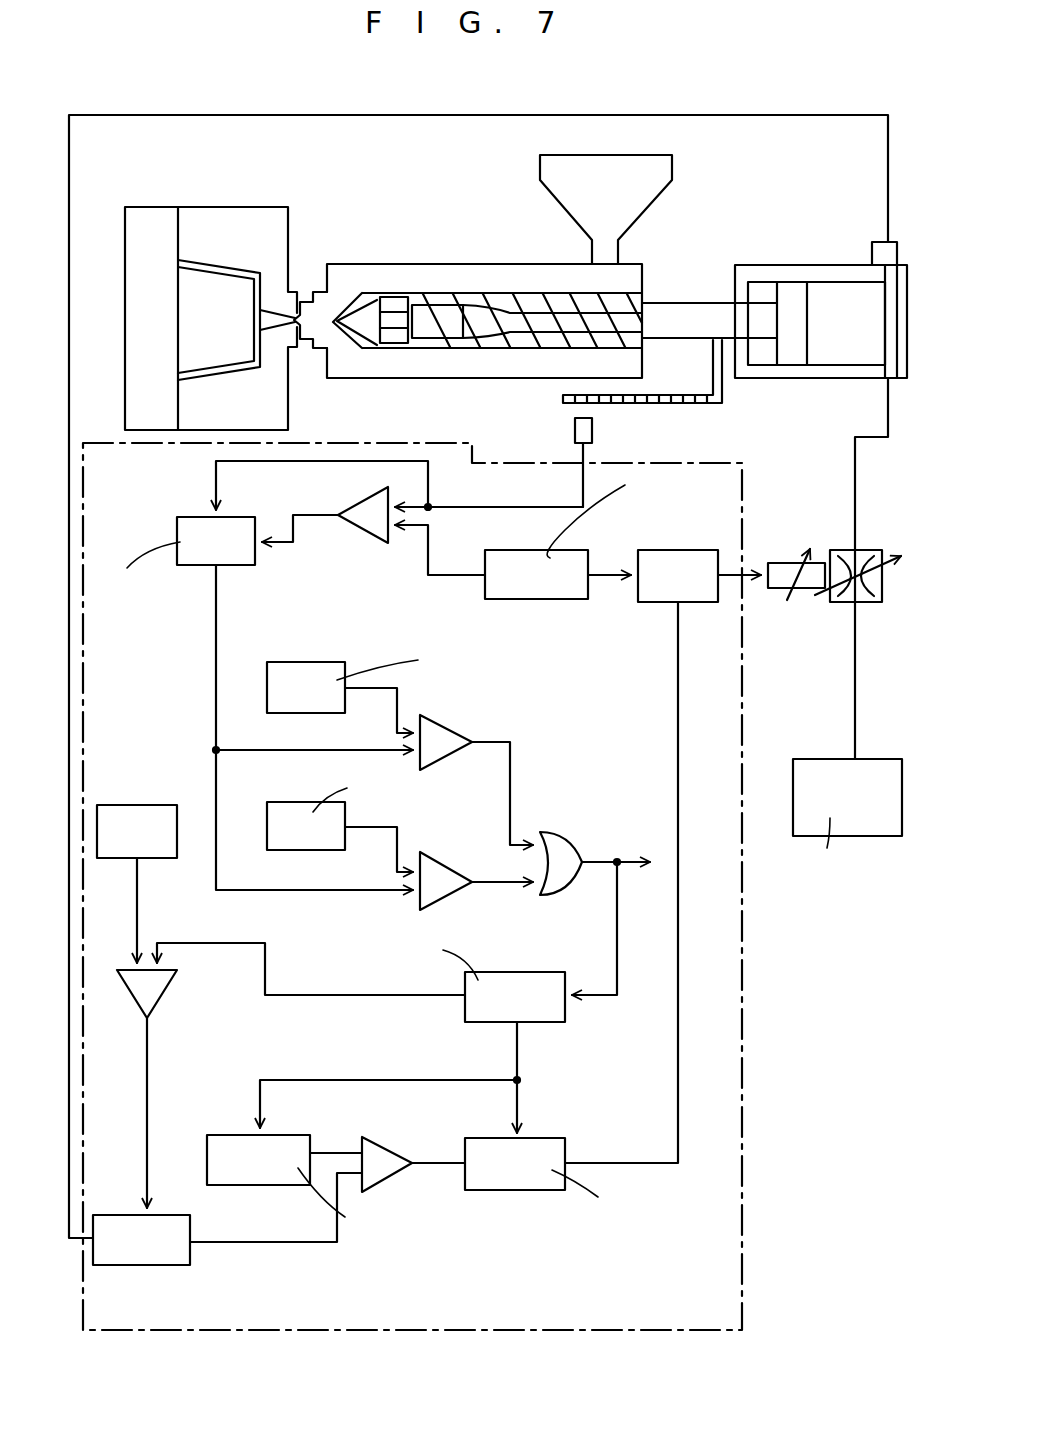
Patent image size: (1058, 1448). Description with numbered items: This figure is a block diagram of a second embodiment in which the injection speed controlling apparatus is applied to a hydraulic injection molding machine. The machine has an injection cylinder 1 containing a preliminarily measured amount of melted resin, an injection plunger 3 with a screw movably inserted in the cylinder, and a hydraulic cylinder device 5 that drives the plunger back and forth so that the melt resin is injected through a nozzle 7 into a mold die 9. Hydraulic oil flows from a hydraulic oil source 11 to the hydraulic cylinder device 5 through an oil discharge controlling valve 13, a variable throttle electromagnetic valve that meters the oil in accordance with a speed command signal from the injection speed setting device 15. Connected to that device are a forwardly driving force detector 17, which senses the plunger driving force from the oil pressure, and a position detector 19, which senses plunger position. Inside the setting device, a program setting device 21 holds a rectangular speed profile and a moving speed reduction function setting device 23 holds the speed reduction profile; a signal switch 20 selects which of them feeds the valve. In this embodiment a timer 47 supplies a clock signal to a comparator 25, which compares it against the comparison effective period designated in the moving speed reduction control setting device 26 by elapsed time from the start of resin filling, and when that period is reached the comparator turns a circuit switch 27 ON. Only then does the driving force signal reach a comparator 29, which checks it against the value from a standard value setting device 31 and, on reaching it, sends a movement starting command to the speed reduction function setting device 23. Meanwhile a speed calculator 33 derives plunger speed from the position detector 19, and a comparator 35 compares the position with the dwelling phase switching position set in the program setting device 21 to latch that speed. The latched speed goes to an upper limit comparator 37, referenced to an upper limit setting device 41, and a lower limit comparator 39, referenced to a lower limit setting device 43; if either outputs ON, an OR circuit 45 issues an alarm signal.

The injection cylinder 1 is at (429, 277).
The injection plunger 3 is at (688, 312).
The hydraulic cylinder device 5 is at (815, 376).
The nozzle 7 is at (298, 317).
The mold die 9 is at (264, 212).
The hydraulic oil source 11 is at (863, 759).
The oil discharge controlling valve 13 is at (868, 553).
The injection speed setting device 15 is at (742, 1142).
The forwardly driving force detector 17 is at (893, 256).
The position detector 19 is at (575, 430).
The signal switch 20 is at (700, 602).
The program setting device 21 is at (583, 527).
The moving speed reduction function setting device 23 is at (590, 1130).
The comparator 25 is at (160, 1000).
The moving speed reduction control setting device 26 is at (545, 1022).
The circuit switch 27 is at (190, 1253).
The comparator 29 is at (398, 1162).
The standard value setting device 31 is at (297, 1112).
The speed calculator 33 is at (184, 530).
The comparator 35 is at (378, 530).
The upper limit comparator 37 is at (463, 733).
The lower limit comparator 39 is at (438, 892).
The upper limit setting device 41 is at (338, 672).
The lower limit setting device 43 is at (330, 850).
The OR circuit 45 is at (547, 830).
The timer 47 is at (145, 800).